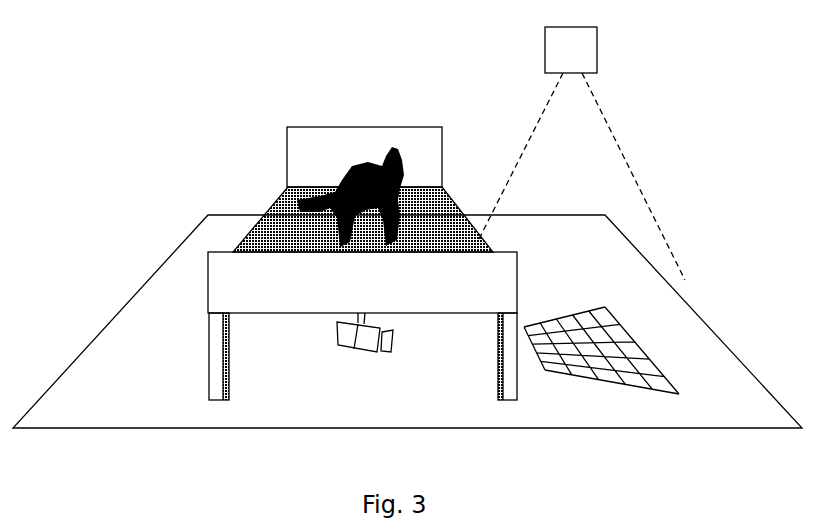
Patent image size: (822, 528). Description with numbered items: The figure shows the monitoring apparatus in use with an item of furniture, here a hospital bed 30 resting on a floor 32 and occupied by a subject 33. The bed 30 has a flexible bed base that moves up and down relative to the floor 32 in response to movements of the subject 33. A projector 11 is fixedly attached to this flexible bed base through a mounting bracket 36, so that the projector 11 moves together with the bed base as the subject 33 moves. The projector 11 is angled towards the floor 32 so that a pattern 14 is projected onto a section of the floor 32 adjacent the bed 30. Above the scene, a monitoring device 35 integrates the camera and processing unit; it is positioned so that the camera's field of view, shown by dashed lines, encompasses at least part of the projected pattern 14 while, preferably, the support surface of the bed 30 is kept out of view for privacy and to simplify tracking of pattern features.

The projector 11 is at (340, 343).
The pattern 14 is at (589, 365).
The hospital bed 30 is at (290, 213).
The floor 32 is at (564, 285).
The subject 33 is at (352, 170).
The monitoring device 35 is at (562, 61).
The mounting bracket 36 is at (360, 320).